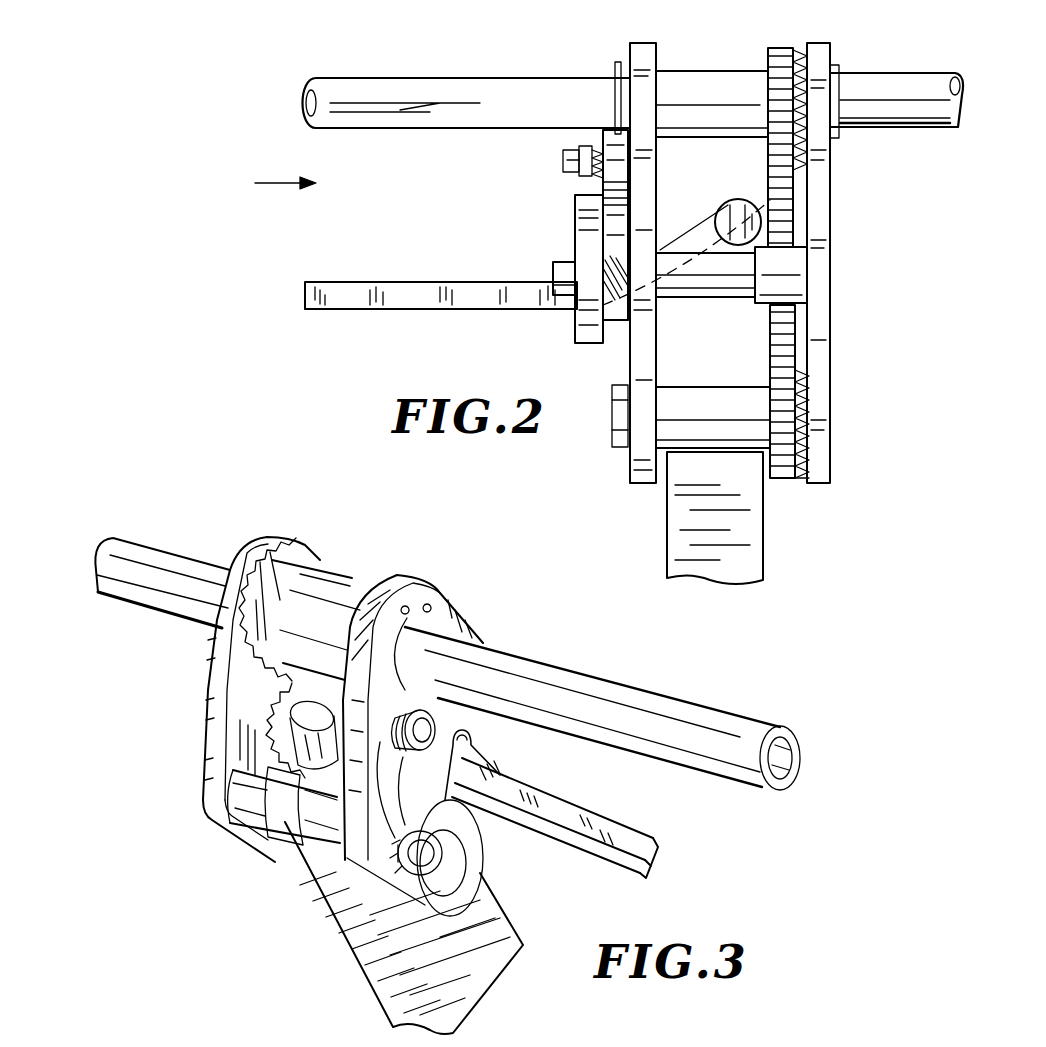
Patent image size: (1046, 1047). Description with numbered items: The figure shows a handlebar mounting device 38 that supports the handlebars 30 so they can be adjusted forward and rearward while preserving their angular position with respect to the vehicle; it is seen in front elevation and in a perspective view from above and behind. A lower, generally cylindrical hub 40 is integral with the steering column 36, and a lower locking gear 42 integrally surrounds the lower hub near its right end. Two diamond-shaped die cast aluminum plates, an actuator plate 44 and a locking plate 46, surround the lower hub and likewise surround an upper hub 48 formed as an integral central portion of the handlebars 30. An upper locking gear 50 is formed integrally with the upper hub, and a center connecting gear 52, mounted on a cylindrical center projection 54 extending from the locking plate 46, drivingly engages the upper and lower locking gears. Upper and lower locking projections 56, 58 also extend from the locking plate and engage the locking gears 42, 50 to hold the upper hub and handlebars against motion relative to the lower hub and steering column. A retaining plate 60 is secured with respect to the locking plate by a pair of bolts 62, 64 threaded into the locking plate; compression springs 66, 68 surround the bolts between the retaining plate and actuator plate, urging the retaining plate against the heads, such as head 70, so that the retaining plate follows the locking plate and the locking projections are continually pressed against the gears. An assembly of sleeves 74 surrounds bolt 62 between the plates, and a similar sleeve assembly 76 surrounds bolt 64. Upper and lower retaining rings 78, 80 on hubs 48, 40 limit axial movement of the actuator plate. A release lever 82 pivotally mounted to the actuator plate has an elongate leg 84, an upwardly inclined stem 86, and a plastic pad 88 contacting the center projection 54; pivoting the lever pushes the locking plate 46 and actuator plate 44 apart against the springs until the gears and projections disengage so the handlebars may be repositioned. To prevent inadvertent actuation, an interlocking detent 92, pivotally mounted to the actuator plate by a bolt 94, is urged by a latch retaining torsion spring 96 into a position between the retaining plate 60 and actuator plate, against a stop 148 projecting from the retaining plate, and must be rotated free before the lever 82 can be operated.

In FIG. 2, the handlebars 30 is at (470, 78).
In FIG. 3, the handlebars 30 is at (705, 712).
In FIG. 2, the steering column 36 is at (750, 572).
In FIG. 3, the steering column 36 is at (385, 977).
In FIG. 2, the handlebar mounting device 38 is at (262, 184).
In FIG. 2, the lower hub 40 is at (714, 402).
In FIG. 3, the lower hub 40 is at (452, 858).
In FIG. 2, the lower locking gear 42 is at (785, 438).
In FIG. 2, the actuator plate 44 is at (640, 485).
In FIG. 3, the actuator plate 44 is at (415, 590).
In FIG. 2, the locking plate 46 is at (820, 212).
In FIG. 3, the locking plate 46 is at (262, 550).
In FIG. 2, the upper hub 48 is at (720, 78).
In FIG. 3, the upper hub 48 is at (345, 592).
In FIG. 2, the upper locking gear 50 is at (781, 48).
In FIG. 3, the upper locking gear 50 is at (310, 556).
In FIG. 2, the center connecting gear 52 is at (800, 336).
In FIG. 3, the center connecting gear 52 is at (274, 724).
In FIG. 2, the center projection 54 is at (765, 330).
In FIG. 2, the upper locking projection 56 is at (812, 58).
In FIG. 2, the lower locking projection 58 is at (795, 474).
In FIG. 2, the retaining plate 60 is at (588, 222).
In FIG. 3, the retaining plate 60 is at (515, 752).
In FIG. 2, the bolt 62 is at (596, 282).
In FIG. 3, the bolt 64 is at (418, 830).
In FIG. 2, the compression spring 66 is at (622, 322).
In FIG. 3, the compression spring 68 is at (345, 870).
In FIG. 2, the bolt head 70 is at (562, 270).
In FIG. 2, the sleeve assembly 74 is at (700, 297).
In FIG. 3, the sleeve assembly 76 is at (297, 822).
In FIG. 2, the upper retaining ring 78 is at (617, 72).
In FIG. 3, the upper retaining ring 78 is at (437, 617).
In FIG. 2, the lower retaining ring 80 is at (612, 448).
In FIG. 2, the release lever 82 is at (395, 282).
In FIG. 3, the release lever 82 is at (620, 838).
In FIG. 2, the elongate leg 84 is at (348, 311).
In FIG. 2, the stem 86 is at (700, 260).
In FIG. 2, the plastic pad 88 is at (738, 205).
In FIG. 3, the plastic pad 88 is at (325, 690).
In FIG. 2, the locking detent 92 is at (610, 136).
In FIG. 3, the locking detent 92 is at (380, 718).
In FIG. 2, the bolt 94 is at (566, 160).
In FIG. 3, the bolt 94 is at (445, 733).
In FIG. 2, the latch retaining torsion spring 96 is at (606, 150).
In FIG. 3, the latch retaining torsion spring 96 is at (425, 735).
In FIG. 2, the stop 148 is at (605, 192).